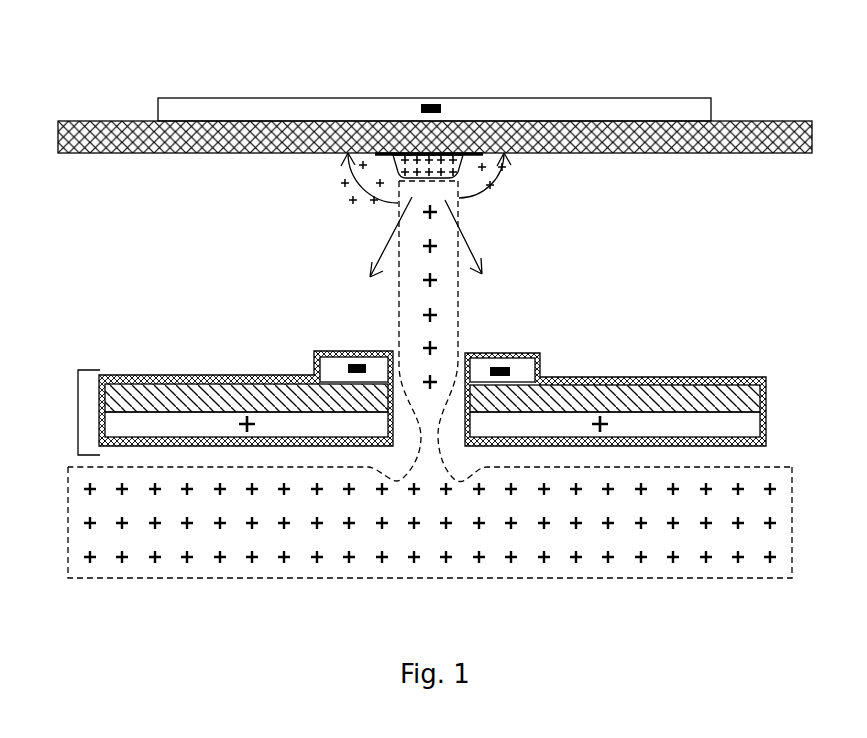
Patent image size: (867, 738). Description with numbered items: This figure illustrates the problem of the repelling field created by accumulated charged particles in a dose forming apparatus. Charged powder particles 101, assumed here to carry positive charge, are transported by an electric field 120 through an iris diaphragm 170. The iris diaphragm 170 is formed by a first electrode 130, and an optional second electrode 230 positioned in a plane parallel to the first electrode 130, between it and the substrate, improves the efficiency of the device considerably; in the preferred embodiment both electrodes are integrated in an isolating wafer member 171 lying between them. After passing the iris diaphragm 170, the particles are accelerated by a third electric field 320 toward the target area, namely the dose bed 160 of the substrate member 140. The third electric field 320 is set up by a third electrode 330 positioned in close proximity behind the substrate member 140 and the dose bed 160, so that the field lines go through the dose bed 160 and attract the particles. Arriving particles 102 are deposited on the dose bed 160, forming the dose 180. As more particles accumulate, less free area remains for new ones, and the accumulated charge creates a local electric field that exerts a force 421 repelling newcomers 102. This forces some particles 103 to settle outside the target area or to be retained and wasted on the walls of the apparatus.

The third electrode 330 is at (562, 108).
The substrate member 140 is at (722, 130).
The dose bed 160 is at (470, 158).
The particles settling outside the target area 103 is at (345, 183).
The dose 180 is at (402, 160).
The third electric field 320 is at (398, 333).
The deposited particles 102 is at (437, 315).
The repelling force 421 is at (400, 222).
The iris diaphragm 170 is at (225, 397).
The electric field 120 is at (412, 425).
The first electrode 130 is at (639, 368).
The isolating wafer member 171 is at (680, 392).
The second electrode 230 is at (530, 362).
The charged powder particles 101 is at (757, 480).